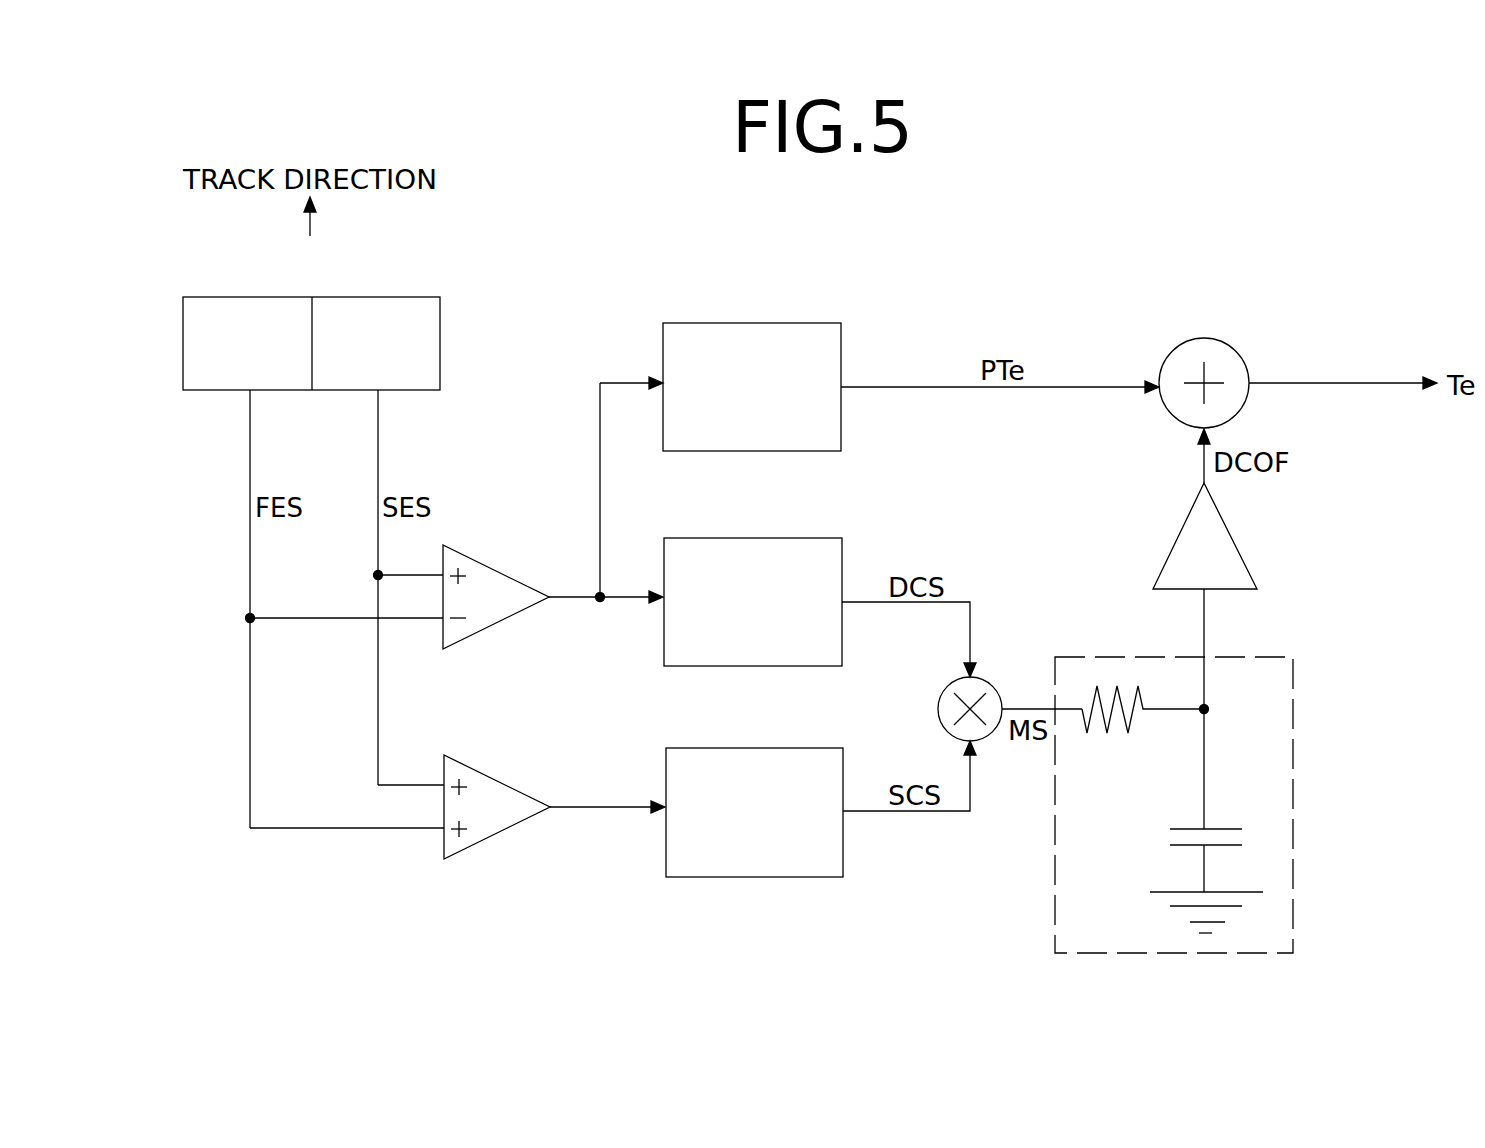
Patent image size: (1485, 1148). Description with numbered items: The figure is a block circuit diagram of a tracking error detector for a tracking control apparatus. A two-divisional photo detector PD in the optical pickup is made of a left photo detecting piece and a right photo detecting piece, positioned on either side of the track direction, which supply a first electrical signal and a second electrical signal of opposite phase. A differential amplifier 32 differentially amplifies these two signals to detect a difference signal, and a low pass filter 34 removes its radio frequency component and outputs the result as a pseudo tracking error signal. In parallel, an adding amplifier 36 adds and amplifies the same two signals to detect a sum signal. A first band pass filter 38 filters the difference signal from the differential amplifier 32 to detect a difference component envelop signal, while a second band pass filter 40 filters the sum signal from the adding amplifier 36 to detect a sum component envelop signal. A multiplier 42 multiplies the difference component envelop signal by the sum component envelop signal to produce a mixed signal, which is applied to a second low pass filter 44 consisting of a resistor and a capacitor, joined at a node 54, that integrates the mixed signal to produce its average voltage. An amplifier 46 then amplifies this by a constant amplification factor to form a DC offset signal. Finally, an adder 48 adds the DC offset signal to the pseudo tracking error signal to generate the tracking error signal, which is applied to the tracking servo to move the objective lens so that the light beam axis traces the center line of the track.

The photo detector PD is at (258, 297).
The differential amplifier 32 is at (498, 569).
The low pass filter 34 is at (692, 323).
The adding amplifier 36 is at (500, 779).
The first band pass filter 38 is at (696, 538).
The second band pass filter 40 is at (696, 748).
The multiplier 42 is at (1012, 669).
The second low pass filter 44 is at (1113, 645).
The amplifier 46 is at (1181, 528).
The adder 48 is at (1216, 338).
The connection node 54 is at (1208, 707).